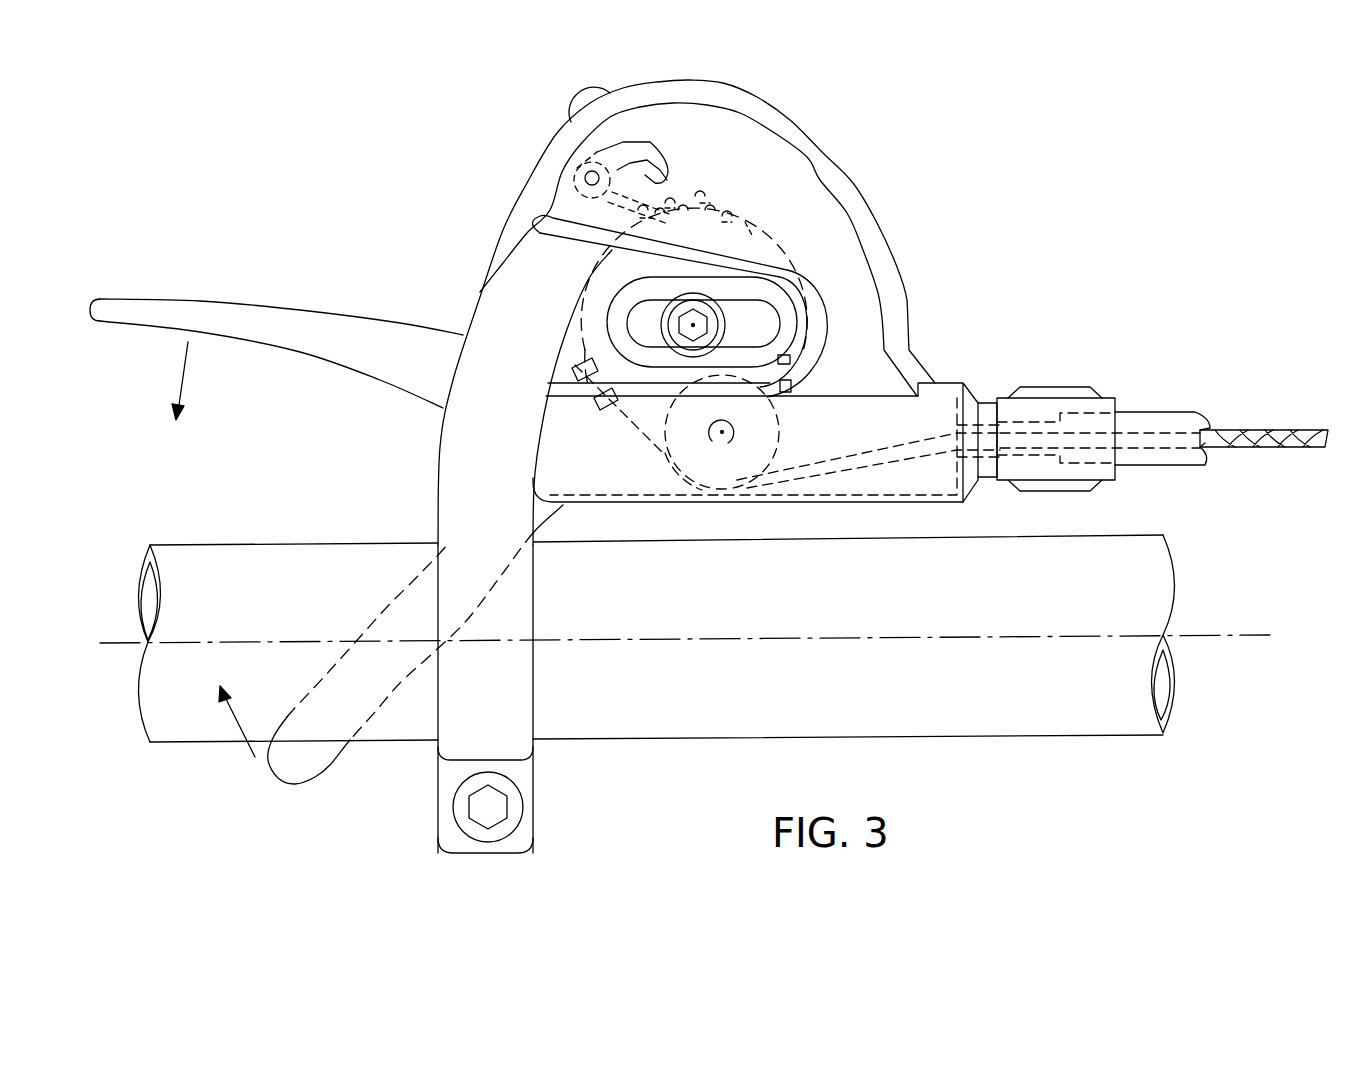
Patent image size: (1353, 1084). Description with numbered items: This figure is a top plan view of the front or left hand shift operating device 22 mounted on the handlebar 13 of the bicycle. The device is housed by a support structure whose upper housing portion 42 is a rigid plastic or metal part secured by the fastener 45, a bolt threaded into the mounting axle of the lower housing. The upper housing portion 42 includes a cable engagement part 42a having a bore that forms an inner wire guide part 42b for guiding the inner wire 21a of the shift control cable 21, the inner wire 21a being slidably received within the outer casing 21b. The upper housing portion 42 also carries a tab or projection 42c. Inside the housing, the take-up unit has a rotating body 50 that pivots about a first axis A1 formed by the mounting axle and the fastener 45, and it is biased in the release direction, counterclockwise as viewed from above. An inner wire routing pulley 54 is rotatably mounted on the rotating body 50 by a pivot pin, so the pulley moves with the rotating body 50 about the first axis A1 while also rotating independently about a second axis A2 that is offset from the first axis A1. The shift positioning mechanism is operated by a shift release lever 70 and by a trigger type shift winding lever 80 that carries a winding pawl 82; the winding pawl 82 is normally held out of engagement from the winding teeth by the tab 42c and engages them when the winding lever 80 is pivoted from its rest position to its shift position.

The handlebar 13 is at (951, 738).
The shift control cable 21 is at (1283, 342).
The inner wire 21a is at (1260, 430).
The outer casing 21b is at (1160, 412).
The front shift operating device 22 is at (968, 172).
The upper housing portion 42 is at (796, 190).
The cable engagement part 42a is at (1050, 387).
The inner wire guide part 42b is at (983, 423).
The tab or projection 42c is at (672, 173).
The fastener 45 is at (678, 340).
The rotating body 50 is at (778, 241).
The inner wire routing pulley 54 is at (733, 497).
The shift release lever 70 is at (299, 307).
The shift winding lever 80 is at (310, 772).
The winding pawl 82 is at (657, 142).
The first axis A1 is at (691, 324).
The second axis A2 is at (712, 440).